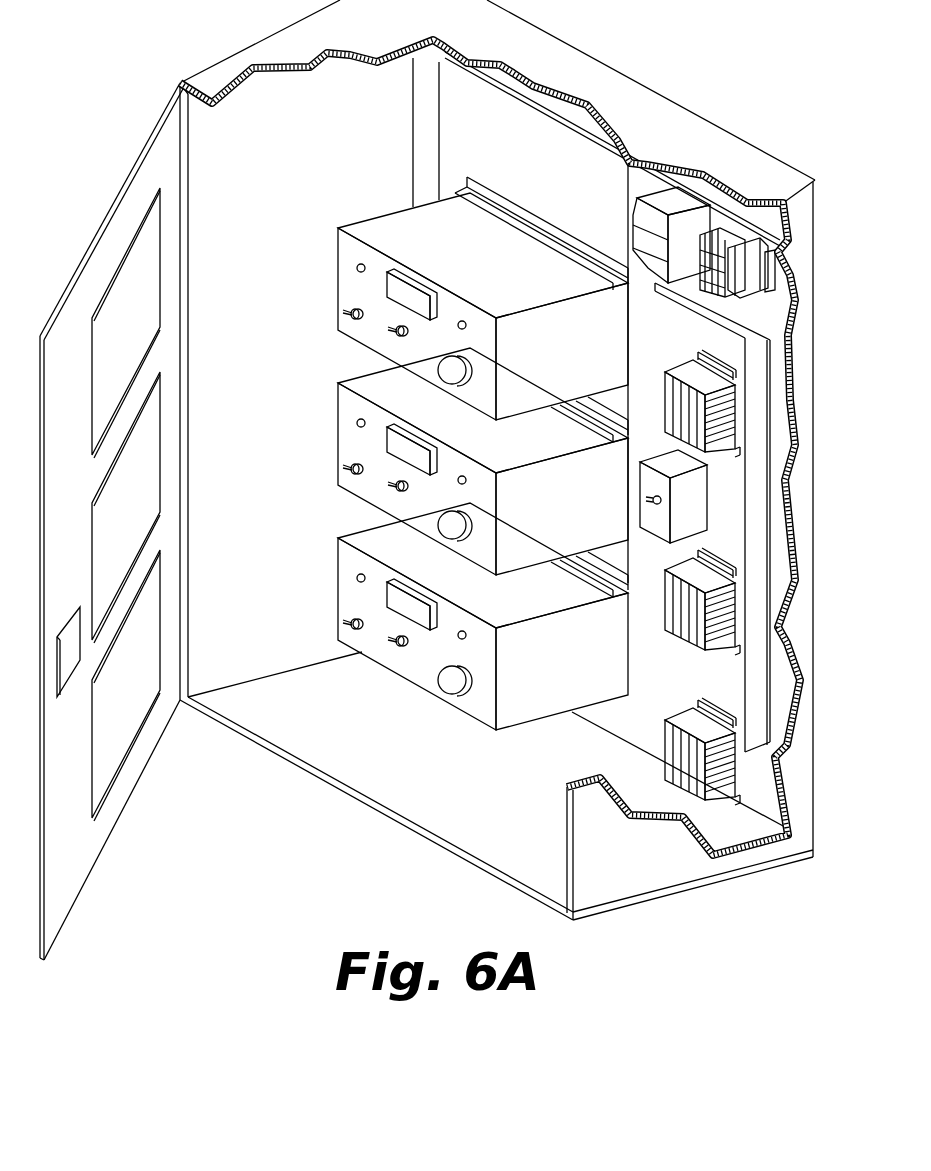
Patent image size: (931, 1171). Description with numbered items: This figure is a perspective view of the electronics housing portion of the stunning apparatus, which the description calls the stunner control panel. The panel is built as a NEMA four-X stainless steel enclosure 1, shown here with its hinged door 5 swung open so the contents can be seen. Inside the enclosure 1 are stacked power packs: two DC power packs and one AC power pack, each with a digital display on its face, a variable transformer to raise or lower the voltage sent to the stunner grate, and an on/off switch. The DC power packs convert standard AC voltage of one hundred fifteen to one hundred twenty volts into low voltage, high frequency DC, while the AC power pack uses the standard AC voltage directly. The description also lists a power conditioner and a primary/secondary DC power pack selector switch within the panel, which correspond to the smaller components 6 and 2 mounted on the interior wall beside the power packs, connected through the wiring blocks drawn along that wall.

The enclosure 1 is at (452, 120).
The control module 2 is at (640, 500).
The door 5 is at (283, 117).
The power supply 6 is at (637, 233).